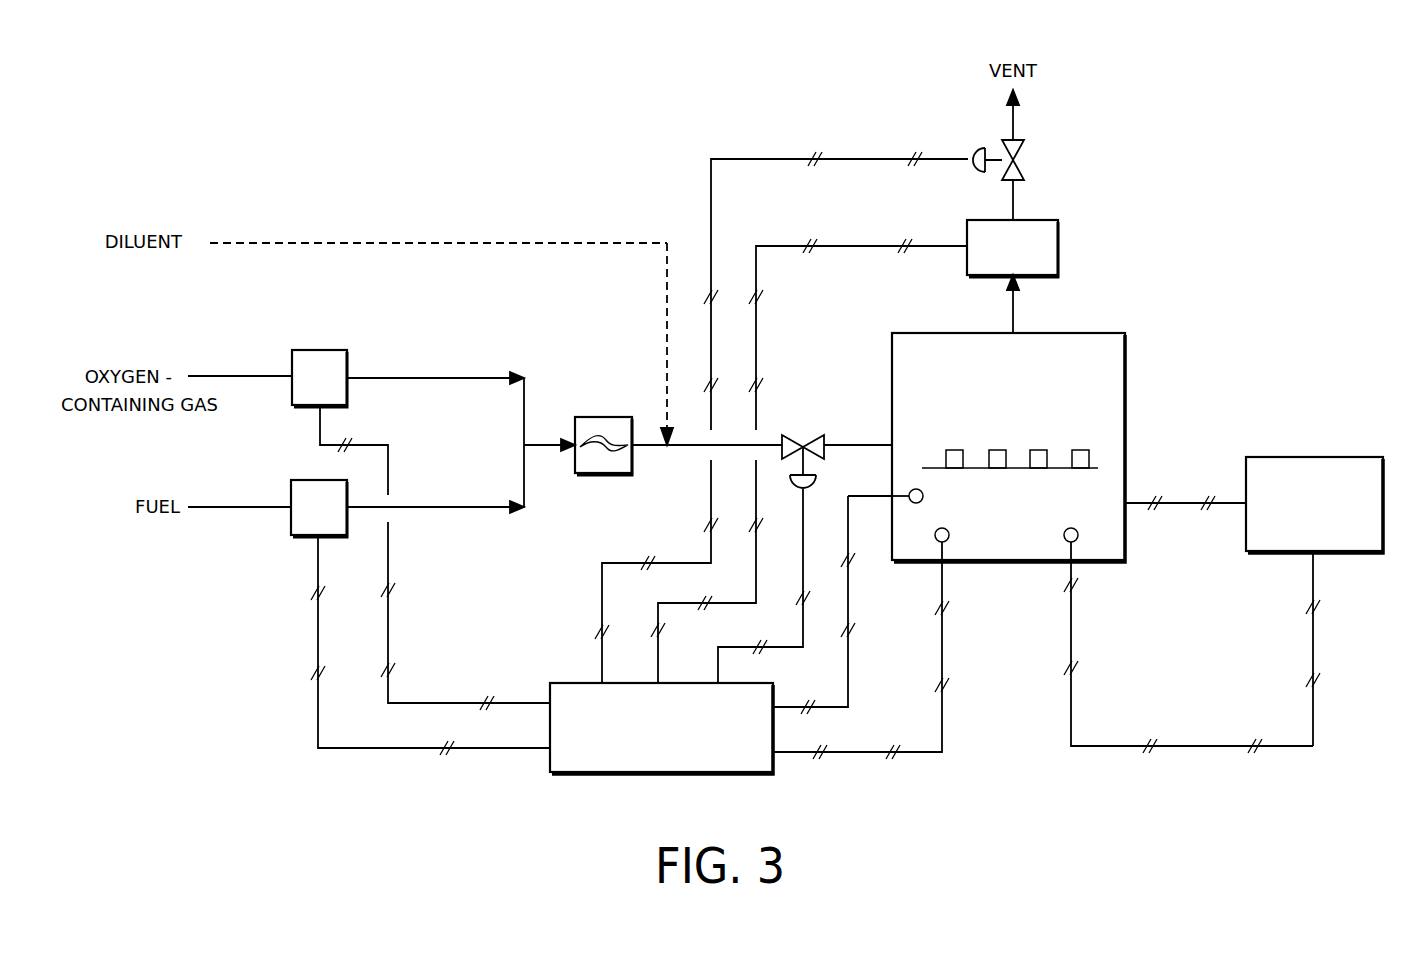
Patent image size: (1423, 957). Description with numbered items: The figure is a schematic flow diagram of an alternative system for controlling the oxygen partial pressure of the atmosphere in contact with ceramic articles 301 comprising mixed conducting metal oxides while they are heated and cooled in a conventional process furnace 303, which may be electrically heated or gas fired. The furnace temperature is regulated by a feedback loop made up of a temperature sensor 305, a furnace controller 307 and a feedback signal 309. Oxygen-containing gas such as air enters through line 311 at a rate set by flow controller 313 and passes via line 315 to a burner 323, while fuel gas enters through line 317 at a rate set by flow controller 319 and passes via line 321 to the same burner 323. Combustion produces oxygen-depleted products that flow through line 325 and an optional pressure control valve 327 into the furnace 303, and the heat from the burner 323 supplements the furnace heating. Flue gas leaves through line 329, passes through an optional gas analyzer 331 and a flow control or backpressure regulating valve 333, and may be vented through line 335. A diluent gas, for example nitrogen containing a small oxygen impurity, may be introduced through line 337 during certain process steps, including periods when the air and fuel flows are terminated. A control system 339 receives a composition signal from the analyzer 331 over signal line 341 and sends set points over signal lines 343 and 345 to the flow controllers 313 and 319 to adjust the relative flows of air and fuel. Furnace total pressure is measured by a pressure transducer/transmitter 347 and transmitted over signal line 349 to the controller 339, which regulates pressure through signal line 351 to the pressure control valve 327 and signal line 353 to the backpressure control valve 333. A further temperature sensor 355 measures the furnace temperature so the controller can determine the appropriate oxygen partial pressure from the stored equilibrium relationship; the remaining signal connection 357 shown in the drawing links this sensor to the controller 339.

The ceramic articles 301 is at (1080, 450).
The furnace 303 is at (1125, 388).
The temperature sensor 305 is at (1071, 528).
The controller 307 is at (1292, 518).
The feedback signal 309 is at (1183, 503).
The line 311 is at (268, 376).
The flow controller 313 is at (310, 350).
The line 315 is at (415, 378).
The line 317 is at (262, 507).
The flow controller 319 is at (310, 480).
The line 321 is at (450, 507).
The burner 323 is at (605, 417).
The line 325 is at (693, 447).
The pressure control valve 327 is at (803, 447).
The line 329 is at (1013, 305).
The gas analyzer 331 is at (1058, 245).
The backpressure regulating valve 333 is at (1023, 170).
The line 335 is at (1013, 118).
The line 337 is at (435, 243).
The control system 339 is at (642, 740).
The signal line 341 is at (850, 246).
The signal line 343 is at (388, 633).
The signal line 345 is at (318, 640).
The pressure transducer/transmitter 347 is at (950, 535).
The signal line 349 is at (942, 718).
The signal line 351 is at (718, 650).
The signal line 353 is at (711, 175).
The temperature sensor 355 is at (923, 496).
The signal line 357 is at (848, 600).